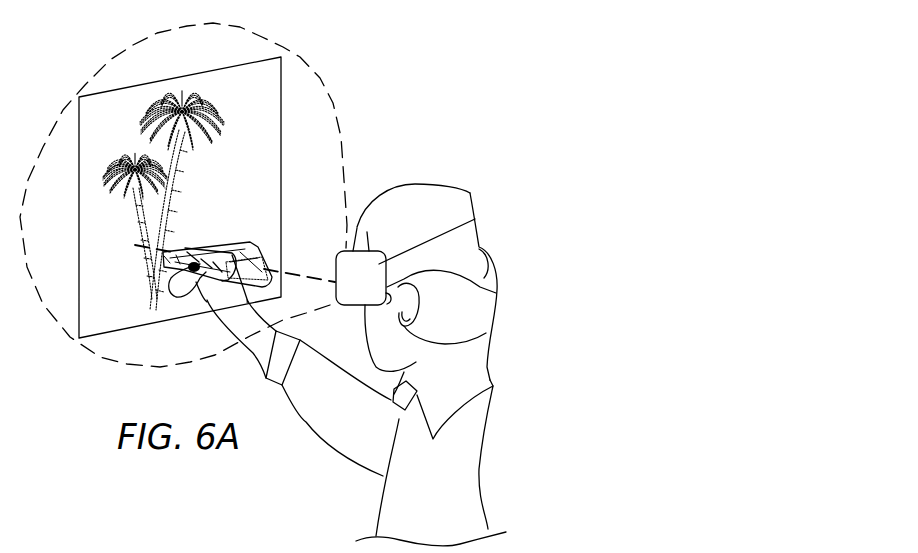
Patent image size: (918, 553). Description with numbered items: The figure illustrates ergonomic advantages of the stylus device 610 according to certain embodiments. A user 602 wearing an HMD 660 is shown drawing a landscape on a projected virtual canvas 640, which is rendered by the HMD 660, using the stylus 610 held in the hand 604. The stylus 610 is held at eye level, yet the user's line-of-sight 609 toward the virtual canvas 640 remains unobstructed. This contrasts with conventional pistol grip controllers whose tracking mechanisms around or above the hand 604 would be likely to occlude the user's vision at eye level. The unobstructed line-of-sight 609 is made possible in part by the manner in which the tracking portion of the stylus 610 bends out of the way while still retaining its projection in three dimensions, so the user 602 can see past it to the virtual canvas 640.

The user 602 is at (449, 467).
The hand of the user 604 is at (222, 320).
The line-of-sight 609 is at (302, 266).
The stylus device 610 is at (245, 240).
The projected virtual canvas 640 is at (283, 100).
The HMD 660 is at (446, 250).